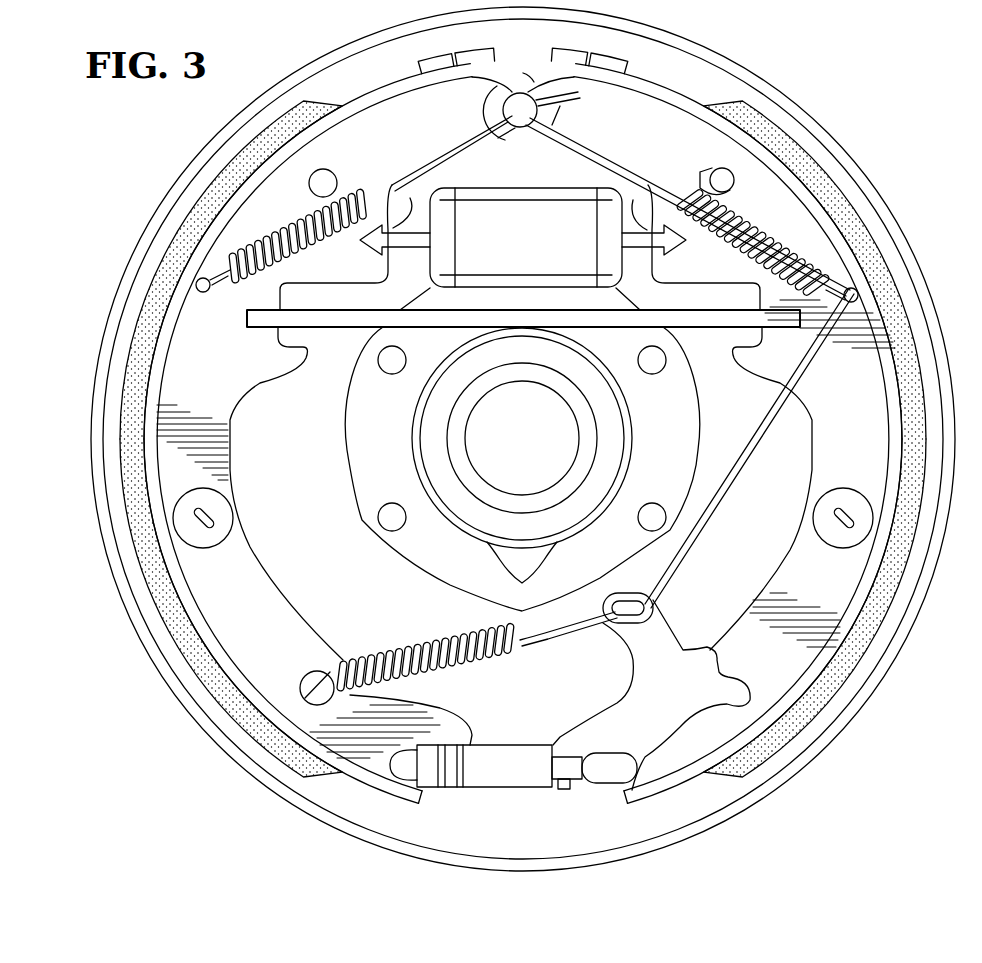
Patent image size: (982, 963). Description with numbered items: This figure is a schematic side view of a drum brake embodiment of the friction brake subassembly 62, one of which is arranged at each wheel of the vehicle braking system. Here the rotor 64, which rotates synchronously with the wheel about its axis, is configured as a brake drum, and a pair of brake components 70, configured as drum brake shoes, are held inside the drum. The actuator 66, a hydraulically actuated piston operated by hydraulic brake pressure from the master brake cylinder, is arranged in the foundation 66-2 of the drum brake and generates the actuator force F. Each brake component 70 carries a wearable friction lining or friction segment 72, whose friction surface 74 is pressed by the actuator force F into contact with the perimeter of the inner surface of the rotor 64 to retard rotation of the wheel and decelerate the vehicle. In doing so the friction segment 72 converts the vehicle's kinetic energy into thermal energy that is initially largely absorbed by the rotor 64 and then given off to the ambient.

The friction brake subassembly 62 is at (893, 208).
The rotor 64 is at (594, 866).
The actuator 66 is at (523, 233).
The foundation 66-2 is at (290, 548).
The brake component 70 is at (921, 376).
The friction segment 72 is at (238, 178).
The friction surface 74 is at (245, 732).